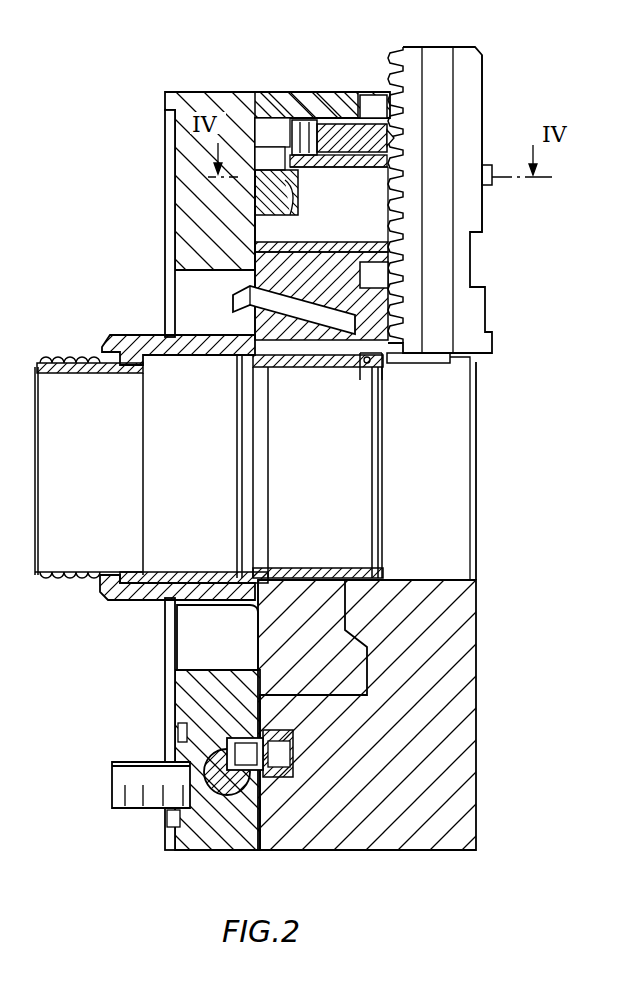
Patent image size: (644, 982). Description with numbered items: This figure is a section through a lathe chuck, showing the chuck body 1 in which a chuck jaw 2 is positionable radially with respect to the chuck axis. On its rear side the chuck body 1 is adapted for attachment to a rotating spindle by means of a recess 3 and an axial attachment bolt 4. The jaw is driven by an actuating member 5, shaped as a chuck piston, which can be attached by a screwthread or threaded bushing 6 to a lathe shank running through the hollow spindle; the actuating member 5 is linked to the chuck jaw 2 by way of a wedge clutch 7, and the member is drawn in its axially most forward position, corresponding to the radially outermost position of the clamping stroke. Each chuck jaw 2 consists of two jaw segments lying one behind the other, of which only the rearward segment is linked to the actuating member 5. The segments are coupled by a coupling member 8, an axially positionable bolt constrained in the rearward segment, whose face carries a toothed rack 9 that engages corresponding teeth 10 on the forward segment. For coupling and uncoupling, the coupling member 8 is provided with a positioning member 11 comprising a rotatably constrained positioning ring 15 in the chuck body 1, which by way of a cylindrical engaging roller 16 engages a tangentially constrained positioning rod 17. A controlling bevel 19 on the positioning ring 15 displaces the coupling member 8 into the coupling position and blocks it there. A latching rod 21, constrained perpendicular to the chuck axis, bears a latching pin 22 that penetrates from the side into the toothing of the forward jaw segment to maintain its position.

The chuck body 1 is at (297, 851).
The chuck jaw 2 is at (424, 44).
The recess 3 is at (168, 222).
The axial attachment bolt 4 is at (102, 752).
The actuating member 5 is at (212, 364).
The threaded bushing 6 is at (60, 357).
The wedge clutch 7 is at (218, 302).
The coupling member 8 is at (327, 233).
The toothed rack 9 is at (390, 227).
The teeth 10 is at (384, 86).
The positioning member 11 is at (247, 193).
The positioning ring 15 is at (260, 212).
The engaging roller 16 is at (255, 737).
The positioning rod 17 is at (217, 760).
The controlling bevel 19 is at (287, 203).
The latching rod 21 is at (472, 102).
The latching pin 22 is at (283, 102).